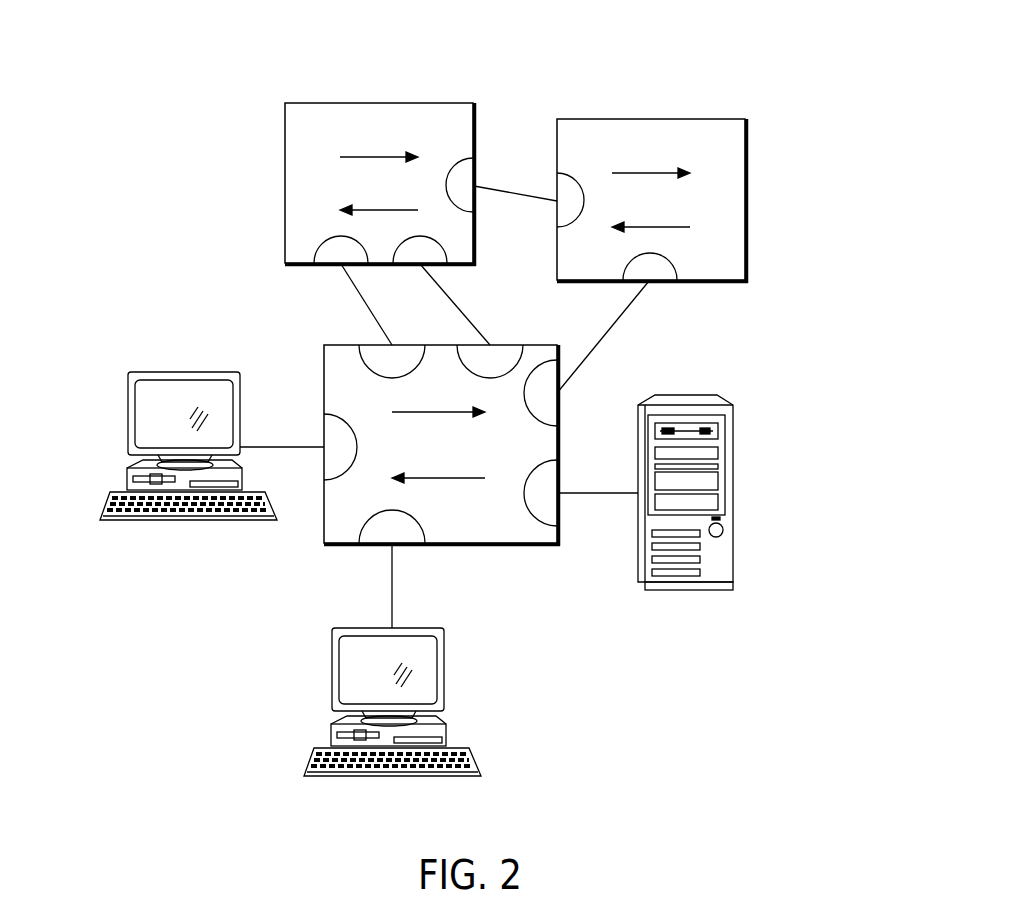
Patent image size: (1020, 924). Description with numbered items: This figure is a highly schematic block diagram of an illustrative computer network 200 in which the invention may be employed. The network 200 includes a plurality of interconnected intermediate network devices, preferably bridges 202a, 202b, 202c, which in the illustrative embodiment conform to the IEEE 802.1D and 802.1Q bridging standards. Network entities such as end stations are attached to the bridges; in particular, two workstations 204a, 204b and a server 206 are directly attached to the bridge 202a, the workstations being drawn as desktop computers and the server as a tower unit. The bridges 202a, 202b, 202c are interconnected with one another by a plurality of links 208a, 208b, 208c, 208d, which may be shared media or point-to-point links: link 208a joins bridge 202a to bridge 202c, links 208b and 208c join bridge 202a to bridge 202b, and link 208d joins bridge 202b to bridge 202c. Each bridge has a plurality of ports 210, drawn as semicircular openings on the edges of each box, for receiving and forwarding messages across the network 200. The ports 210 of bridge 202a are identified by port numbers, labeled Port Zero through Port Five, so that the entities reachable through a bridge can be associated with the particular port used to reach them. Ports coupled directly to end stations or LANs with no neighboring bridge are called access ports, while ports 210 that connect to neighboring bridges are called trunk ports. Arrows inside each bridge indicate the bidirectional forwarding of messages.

The computer network 200 is at (712, 50).
The bridge 202a is at (442, 451).
The bridge 202b is at (285, 181).
The bridge 202c is at (745, 197).
The workstation 204a is at (332, 672).
The workstation 204b is at (128, 415).
The server 206 is at (736, 461).
The link 208a is at (607, 335).
The link 208b is at (458, 307).
The link 208c is at (362, 300).
The link 208d is at (517, 192).
The port 210 is at (355, 358).